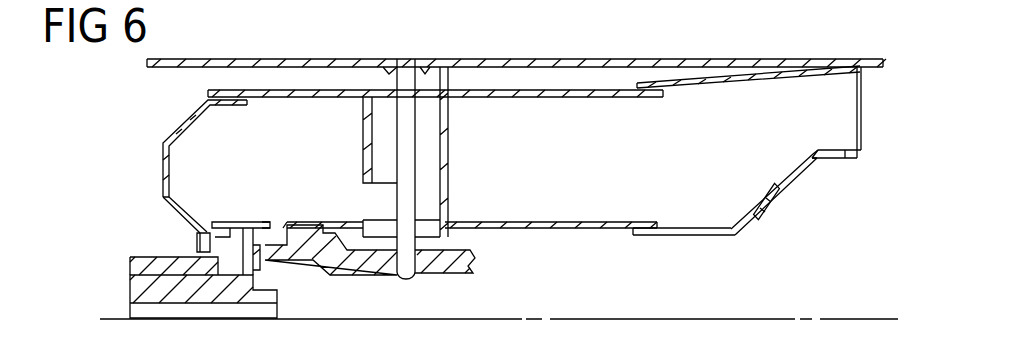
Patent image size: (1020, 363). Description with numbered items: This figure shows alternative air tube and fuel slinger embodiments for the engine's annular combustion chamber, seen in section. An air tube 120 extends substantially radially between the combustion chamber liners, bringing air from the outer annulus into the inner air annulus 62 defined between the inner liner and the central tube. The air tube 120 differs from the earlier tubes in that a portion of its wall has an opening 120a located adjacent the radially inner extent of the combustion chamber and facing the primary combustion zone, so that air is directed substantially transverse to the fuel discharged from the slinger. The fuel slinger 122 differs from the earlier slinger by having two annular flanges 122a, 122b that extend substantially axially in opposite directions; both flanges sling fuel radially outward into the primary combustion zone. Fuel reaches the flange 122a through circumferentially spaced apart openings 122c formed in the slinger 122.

The air tube 120 is at (448, 148).
The opening 120a is at (377, 178).
The inner air annulus 62 is at (467, 238).
The fuel slinger 122 is at (282, 297).
The annular flange 122a is at (219, 224).
The annular flange 122b is at (262, 227).
The openings 122c is at (207, 242).